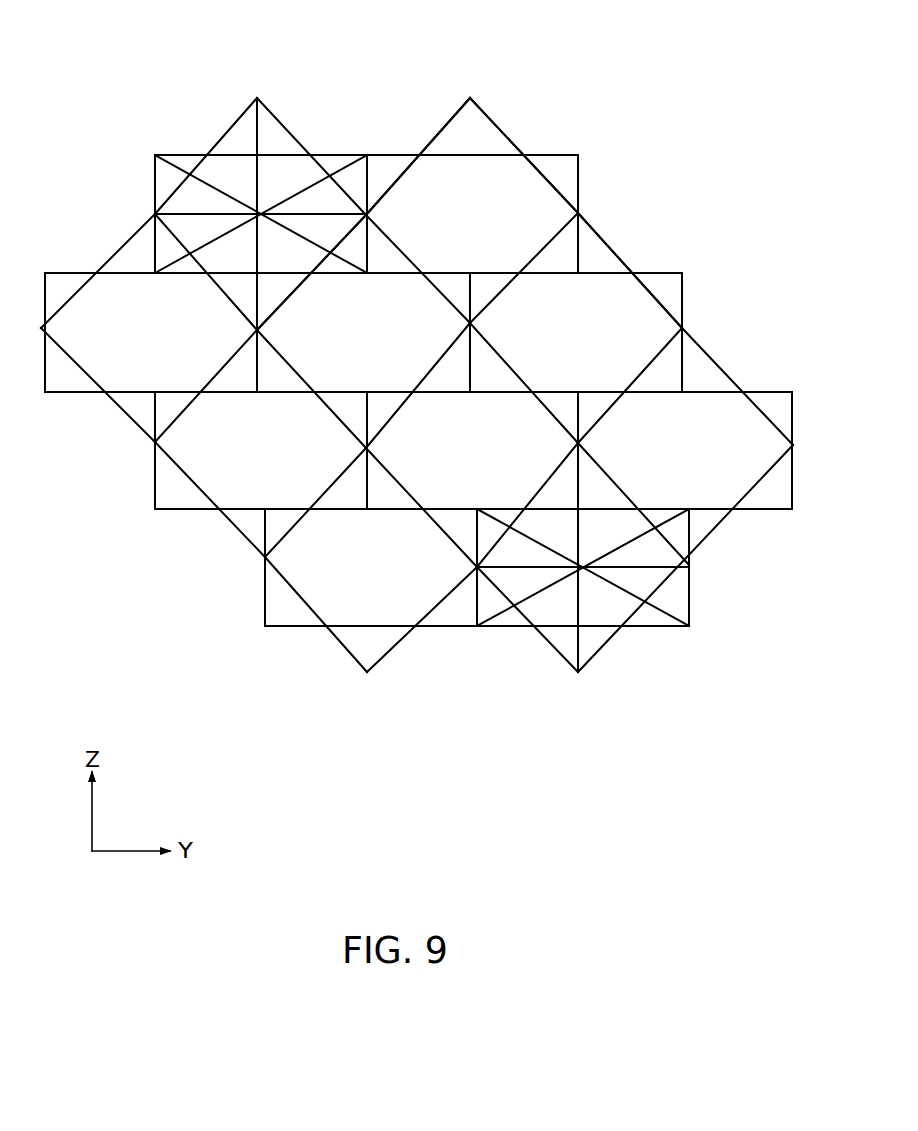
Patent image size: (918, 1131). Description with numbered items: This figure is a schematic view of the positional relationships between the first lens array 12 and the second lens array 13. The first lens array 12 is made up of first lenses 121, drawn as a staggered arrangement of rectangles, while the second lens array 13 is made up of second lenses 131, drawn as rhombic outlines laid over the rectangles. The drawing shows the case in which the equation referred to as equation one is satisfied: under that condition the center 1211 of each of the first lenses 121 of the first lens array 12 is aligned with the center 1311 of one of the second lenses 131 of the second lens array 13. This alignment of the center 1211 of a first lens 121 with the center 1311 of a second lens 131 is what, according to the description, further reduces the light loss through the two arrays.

The first lens array 12 is at (73, 393).
The first lens 121 is at (278, 610).
The center of the first lens 1211 is at (257, 214).
The second lens array 13 is at (488, 113).
The second lens 131 is at (525, 210).
The center of the second lens 1311 is at (257, 214).